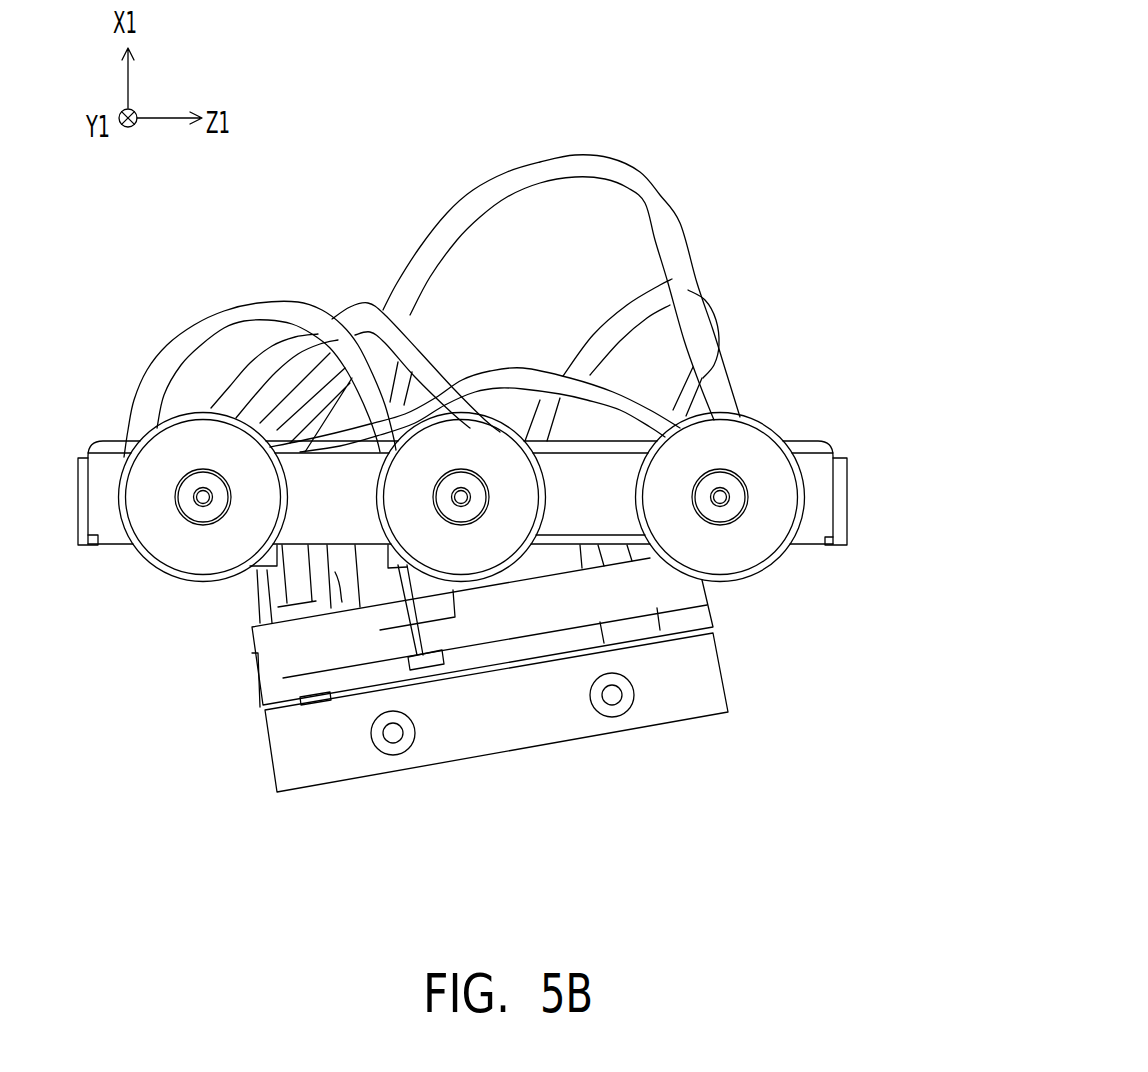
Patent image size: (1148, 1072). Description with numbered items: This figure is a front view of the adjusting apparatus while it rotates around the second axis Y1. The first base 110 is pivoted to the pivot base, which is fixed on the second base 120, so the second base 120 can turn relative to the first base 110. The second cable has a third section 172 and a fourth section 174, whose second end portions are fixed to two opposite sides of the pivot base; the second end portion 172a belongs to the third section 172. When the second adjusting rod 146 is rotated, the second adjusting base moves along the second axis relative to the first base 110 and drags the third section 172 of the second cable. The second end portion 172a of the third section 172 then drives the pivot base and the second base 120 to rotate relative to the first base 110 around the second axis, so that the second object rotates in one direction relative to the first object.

The first base 110 is at (813, 502).
The second base 120 is at (698, 665).
The second adjusting rod 146 is at (468, 548).
The third section 172 is at (610, 330).
The second end portion 172a is at (315, 702).
The fourth section 174 is at (435, 350).